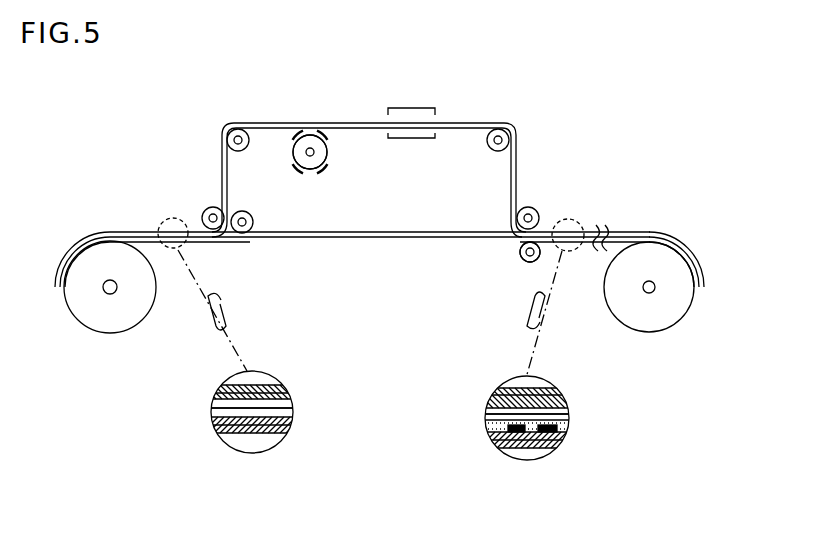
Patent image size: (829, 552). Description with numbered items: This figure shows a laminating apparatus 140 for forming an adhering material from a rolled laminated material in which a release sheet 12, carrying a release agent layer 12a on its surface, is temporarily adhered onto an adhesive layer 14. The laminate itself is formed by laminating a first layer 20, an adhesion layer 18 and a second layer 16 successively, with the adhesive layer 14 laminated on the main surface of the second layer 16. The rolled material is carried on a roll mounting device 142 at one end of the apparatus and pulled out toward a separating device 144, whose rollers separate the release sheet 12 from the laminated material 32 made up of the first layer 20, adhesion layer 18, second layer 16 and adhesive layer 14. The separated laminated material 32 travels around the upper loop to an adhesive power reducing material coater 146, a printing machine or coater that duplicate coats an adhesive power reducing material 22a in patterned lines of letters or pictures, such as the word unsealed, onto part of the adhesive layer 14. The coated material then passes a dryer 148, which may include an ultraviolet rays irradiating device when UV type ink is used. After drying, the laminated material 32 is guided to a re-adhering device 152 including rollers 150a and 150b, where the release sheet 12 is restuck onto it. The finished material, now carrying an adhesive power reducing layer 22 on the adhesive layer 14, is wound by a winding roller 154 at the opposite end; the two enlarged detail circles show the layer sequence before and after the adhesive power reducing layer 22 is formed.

The release sheet 12 is at (323, 239).
The release agent layer 12a is at (287, 431).
The adhesive layer 14 is at (215, 412).
The second layer 16 is at (291, 410).
The adhesion layer 18 is at (291, 394).
The first layer 20 is at (285, 384).
The adhesive power reducing layer 22 is at (560, 432).
The adhesive power reducing material 22a is at (331, 156).
The laminated material 32 is at (222, 182).
The laminating apparatus 140 is at (431, 74).
The roll mounting device 142 is at (108, 327).
The separating device 144 is at (230, 248).
The adhesive power reducing material coater 146 is at (321, 177).
The dryer 148 is at (428, 110).
The roller 150a is at (536, 208).
The roller 150b is at (525, 264).
The re-adhering device 152 is at (507, 250).
The winding roller 154 is at (663, 314).